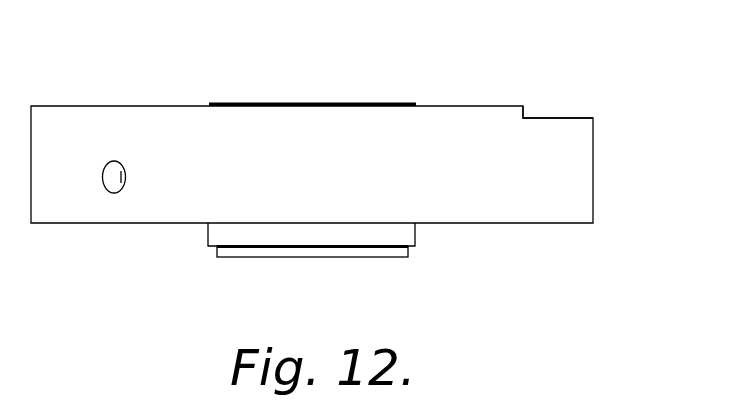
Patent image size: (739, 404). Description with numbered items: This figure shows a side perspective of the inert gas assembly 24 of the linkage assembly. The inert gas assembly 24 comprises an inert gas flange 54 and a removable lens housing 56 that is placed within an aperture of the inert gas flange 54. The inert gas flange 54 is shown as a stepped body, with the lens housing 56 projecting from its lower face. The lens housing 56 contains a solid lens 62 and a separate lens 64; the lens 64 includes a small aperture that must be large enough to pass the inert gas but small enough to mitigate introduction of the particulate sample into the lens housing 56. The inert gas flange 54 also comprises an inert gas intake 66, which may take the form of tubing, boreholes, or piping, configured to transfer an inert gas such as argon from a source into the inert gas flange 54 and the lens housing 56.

The inert gas assembly 24 is at (485, 85).
The inert gas flange 54 is at (583, 118).
The lens housing 56 is at (410, 248).
The solid lens 62 is at (305, 255).
The lens 64 is at (268, 103).
The inert gas intake 66 is at (110, 184).